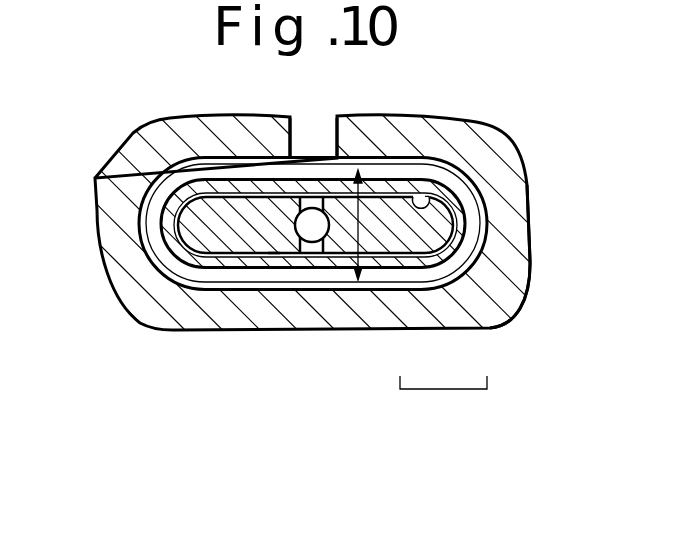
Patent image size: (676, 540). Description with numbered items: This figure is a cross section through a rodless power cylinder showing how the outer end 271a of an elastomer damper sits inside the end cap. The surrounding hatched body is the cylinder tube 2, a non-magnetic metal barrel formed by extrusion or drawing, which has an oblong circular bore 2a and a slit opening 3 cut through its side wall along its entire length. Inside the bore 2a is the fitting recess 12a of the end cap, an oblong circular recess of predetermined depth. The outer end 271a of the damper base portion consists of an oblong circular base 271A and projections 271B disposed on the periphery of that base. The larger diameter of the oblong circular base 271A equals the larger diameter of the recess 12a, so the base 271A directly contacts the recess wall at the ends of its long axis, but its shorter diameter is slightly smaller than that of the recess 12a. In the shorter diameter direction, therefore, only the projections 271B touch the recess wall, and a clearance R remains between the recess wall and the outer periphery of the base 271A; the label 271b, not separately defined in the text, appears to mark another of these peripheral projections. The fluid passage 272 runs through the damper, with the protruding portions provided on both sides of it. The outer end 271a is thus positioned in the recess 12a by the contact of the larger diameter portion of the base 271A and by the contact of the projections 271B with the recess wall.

The cylinder tube 2 is at (387, 127).
The bore 2a is at (515, 266).
The slit opening 3 is at (318, 152).
The projections 271B is at (424, 157).
The inner hatched ring member 271b is at (470, 218).
The oblong circular base 271A is at (380, 233).
The outer end 271a is at (443, 402).
The fluid passage 272 is at (309, 208).
The fitting recess 12a is at (428, 204).
The clearance R is at (273, 258).